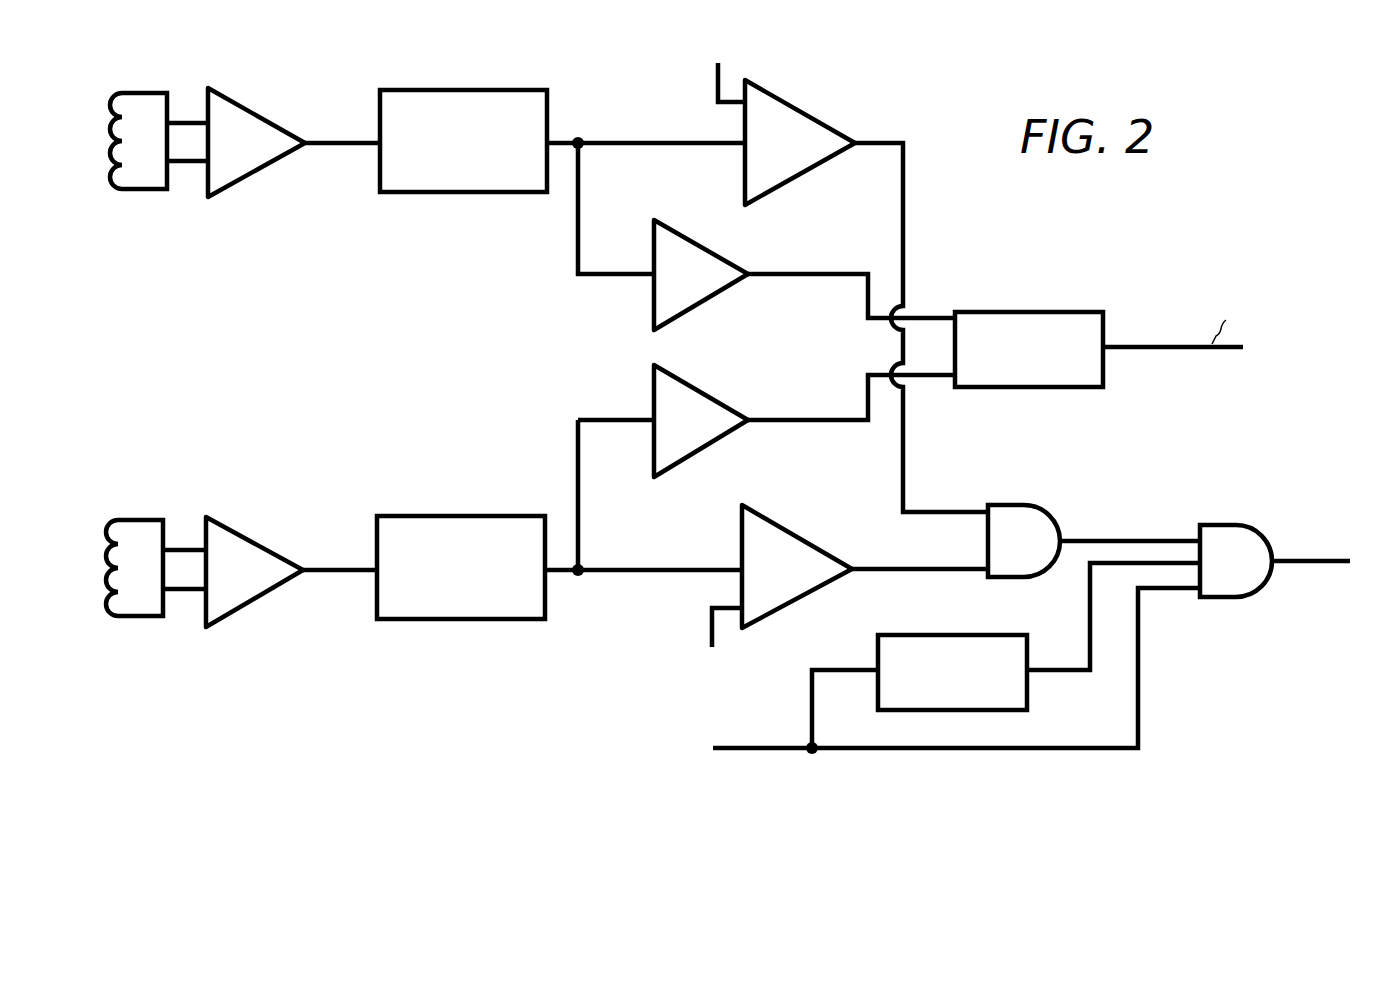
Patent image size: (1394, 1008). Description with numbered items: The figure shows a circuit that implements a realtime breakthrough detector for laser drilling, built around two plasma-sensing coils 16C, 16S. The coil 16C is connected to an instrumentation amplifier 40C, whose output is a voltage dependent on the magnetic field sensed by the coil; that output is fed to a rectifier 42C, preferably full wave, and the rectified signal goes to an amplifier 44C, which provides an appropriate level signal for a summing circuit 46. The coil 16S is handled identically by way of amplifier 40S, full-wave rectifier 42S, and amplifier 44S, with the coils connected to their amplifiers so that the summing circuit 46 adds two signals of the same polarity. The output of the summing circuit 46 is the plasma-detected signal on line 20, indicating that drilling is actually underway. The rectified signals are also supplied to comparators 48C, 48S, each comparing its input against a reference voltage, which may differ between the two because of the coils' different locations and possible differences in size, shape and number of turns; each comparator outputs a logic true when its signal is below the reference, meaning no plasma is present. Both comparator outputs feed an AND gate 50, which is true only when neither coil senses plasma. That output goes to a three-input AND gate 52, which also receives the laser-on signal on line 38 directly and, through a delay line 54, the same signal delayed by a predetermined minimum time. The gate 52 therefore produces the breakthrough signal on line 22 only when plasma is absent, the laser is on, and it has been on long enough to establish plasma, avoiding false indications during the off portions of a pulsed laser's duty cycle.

The coil 16C is at (133, 92).
The coil 16S is at (124, 521).
The instrumentation amplifier 40C is at (257, 113).
The amplifier 40S is at (249, 539).
The rectifier 42C is at (440, 89).
The full-wave rectifier 42S is at (462, 515).
The amplifier 44C is at (708, 250).
The amplifier 44S is at (673, 378).
The summing circuit 46 is at (1013, 311).
The comparator 48C is at (815, 118).
The comparator 48S is at (805, 538).
The AND gate 50 is at (1028, 505).
The AND gate 52 is at (1273, 543).
The delay line 54 is at (963, 635).
The line 20 is at (1180, 351).
The line 22 is at (1307, 567).
The line 38 is at (772, 745).